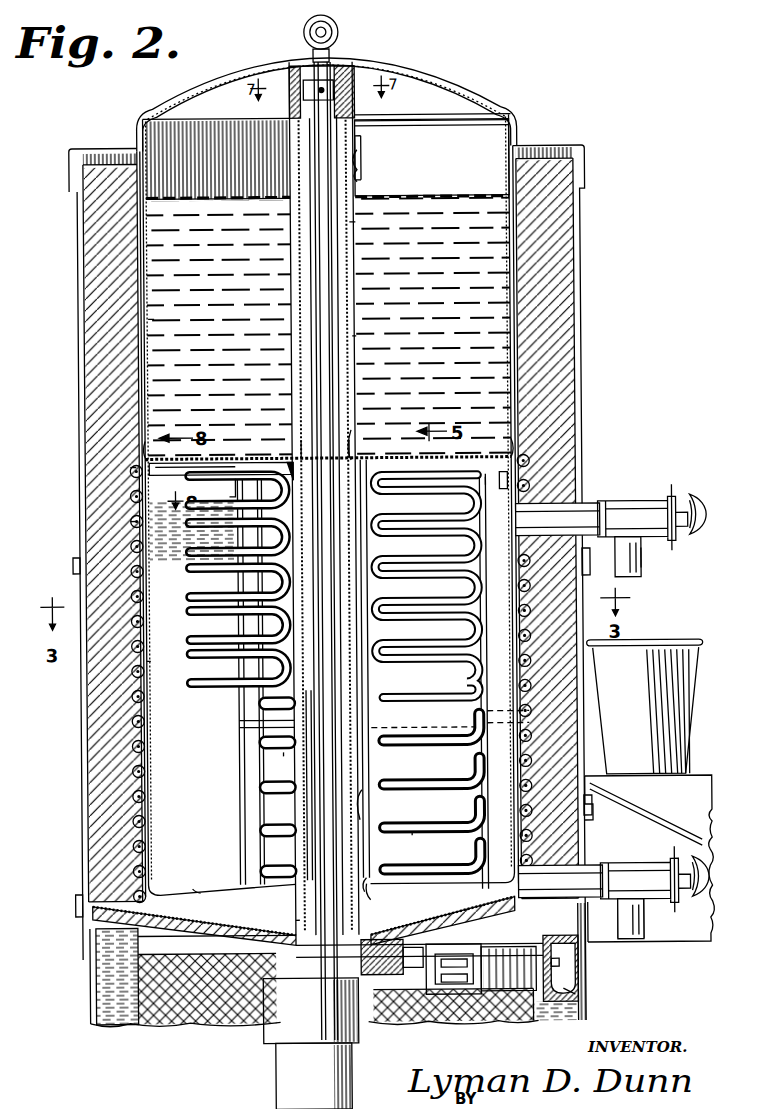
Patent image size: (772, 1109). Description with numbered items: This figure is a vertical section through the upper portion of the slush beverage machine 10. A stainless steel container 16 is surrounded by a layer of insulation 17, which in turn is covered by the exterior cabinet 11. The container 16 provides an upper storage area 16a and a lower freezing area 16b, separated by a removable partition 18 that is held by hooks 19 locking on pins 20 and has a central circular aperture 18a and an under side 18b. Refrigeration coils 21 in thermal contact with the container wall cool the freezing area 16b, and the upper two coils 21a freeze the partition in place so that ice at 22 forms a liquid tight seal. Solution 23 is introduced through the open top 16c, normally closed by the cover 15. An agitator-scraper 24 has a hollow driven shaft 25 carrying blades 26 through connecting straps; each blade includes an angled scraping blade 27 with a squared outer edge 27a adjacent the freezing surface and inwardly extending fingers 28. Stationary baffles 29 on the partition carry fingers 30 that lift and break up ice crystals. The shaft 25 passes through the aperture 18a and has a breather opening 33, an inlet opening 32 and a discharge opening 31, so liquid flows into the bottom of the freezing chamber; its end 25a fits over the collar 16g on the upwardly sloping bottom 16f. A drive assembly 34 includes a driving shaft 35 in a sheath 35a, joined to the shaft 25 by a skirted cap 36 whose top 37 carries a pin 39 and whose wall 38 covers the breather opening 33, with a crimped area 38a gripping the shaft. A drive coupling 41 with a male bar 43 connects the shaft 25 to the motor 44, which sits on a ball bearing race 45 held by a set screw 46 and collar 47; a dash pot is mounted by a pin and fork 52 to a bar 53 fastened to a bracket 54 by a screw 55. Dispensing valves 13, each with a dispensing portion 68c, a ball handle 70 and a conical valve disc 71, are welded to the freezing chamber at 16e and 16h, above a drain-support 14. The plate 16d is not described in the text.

The beverage machine 10 is at (588, 264).
The cabinet 11 is at (586, 215).
The dispensing valve 13 is at (616, 496).
The drain-support 14 is at (686, 946).
The cover 15 is at (446, 72).
The container 16 is at (150, 274).
The storage area 16a is at (150, 320).
The freezing area 16b is at (150, 664).
The open top 16c is at (488, 126).
The plate 16d is at (217, 490).
The upper valve location 16e is at (584, 470).
The upwardly sloping bottom 16f is at (204, 880).
The collar 16g is at (357, 893).
The lower valve location 16h is at (442, 950).
The insulation 17 is at (576, 316).
The partition 18 is at (228, 448).
The circular aperture 18a is at (354, 456).
The under side of partition 18b is at (258, 460).
The hooks 19 is at (130, 520).
The pins 20 is at (220, 470).
The refrigeration coils 21 is at (144, 722).
The upper two coils 21a is at (130, 468).
The ice seal portion 22 is at (148, 440).
The solution 23 is at (328, 327).
The agitator-scraper 24 is at (240, 714).
The body tube or hollow driven shaft 25 is at (370, 333).
The tube end 25a is at (362, 880).
The blades 26 is at (240, 736).
The scraping blade 27 is at (258, 760).
The squared outer edge 27a is at (518, 832).
The fingers 28 is at (276, 840).
The stationary baffles 29 is at (195, 552).
The baffle fingers 30 is at (222, 678).
The discharge opening 31 is at (362, 806).
The inlet opening 32 is at (356, 428).
The breather opening 33 is at (368, 138).
The drive assembly 34 is at (193, 981).
The driving shaft 35 is at (310, 283).
The sheath 35a is at (356, 224).
The skirted cap 36 is at (380, 113).
The cap top 37 is at (312, 56).
The cap wall or skirt 38 is at (218, 159).
The crimped area 38a is at (362, 180).
The pin 39 is at (342, 74).
The drive coupling 41 is at (386, 910).
The male bar 43 is at (382, 1000).
The motor 44 is at (314, 1076).
The ball bearing race 45 is at (334, 1010).
The set screw 46 is at (410, 950).
The collar 47 is at (163, 976).
The pin and fork 52 is at (453, 1006).
The bar 53 is at (509, 1005).
The bracket 54 is at (572, 996).
The screw 55 is at (556, 962).
The dispensing portion 68c is at (642, 568).
The ball handle 70 is at (700, 498).
The conical valve disc 71 is at (674, 488).